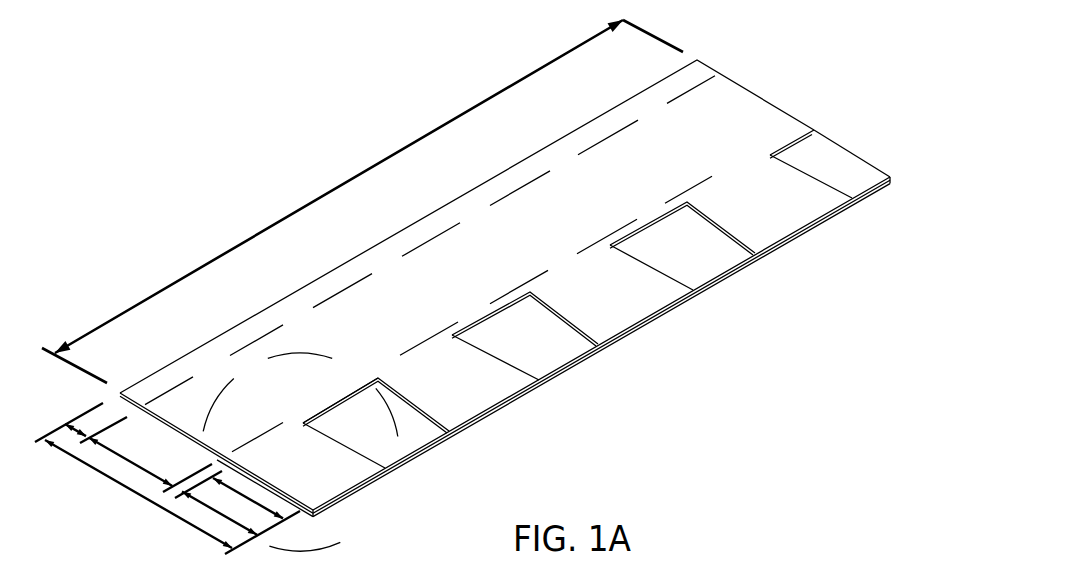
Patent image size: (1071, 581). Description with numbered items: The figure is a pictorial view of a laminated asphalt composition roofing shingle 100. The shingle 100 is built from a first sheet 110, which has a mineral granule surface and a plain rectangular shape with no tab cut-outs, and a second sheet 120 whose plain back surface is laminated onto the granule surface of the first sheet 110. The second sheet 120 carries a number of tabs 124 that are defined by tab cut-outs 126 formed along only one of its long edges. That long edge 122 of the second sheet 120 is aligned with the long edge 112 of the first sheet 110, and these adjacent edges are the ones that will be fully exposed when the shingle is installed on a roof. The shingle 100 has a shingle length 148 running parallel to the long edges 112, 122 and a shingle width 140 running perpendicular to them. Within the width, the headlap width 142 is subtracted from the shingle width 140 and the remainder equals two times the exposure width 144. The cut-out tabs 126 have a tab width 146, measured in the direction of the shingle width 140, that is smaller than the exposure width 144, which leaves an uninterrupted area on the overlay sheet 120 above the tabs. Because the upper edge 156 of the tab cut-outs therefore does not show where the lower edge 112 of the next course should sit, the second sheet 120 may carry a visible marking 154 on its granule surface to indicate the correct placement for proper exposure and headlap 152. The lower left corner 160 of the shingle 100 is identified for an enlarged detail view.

The laminated asphalt composition roofing shingle 100 is at (875, 63).
The first sheet 110 is at (847, 147).
The long edge of the first sheet 112 is at (370, 468).
The second sheet 120 is at (755, 91).
The long edge of the second sheet 122 is at (353, 487).
The tabs 124 is at (326, 471).
The tab cut-outs 126 is at (411, 438).
The shingle width 140 is at (202, 532).
The headlap width 142 is at (69, 429).
The exposure width 144 is at (142, 467).
The tab width 146 is at (252, 501).
The shingle length 148 is at (341, 186).
The headlap 152 is at (168, 388).
The visible marking 154 is at (255, 440).
The upper edge of the tab cut-outs 156 is at (313, 414).
The lower left corner 160 is at (397, 472).